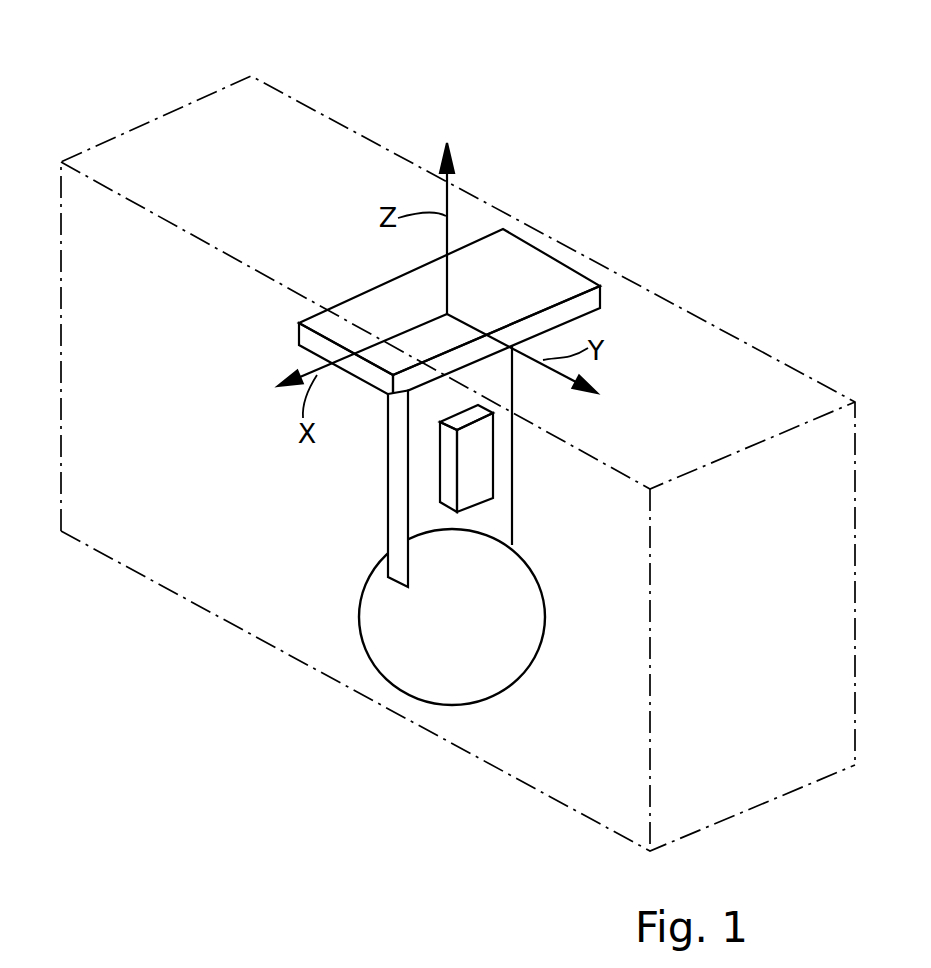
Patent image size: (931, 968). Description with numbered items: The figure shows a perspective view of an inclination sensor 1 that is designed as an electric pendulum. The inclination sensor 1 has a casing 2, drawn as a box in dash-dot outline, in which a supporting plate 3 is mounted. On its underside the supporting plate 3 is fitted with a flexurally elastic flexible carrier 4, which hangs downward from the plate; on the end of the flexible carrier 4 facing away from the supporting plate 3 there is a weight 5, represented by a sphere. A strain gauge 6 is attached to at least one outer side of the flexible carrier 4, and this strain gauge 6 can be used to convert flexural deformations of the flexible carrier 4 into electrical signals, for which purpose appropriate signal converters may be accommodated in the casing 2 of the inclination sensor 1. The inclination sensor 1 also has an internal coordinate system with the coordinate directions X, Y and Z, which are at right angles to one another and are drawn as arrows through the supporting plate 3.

The inclination sensor 1 is at (397, 108).
The casing 2 is at (294, 97).
The supporting plate 3 is at (536, 266).
The flexible carrier 4 is at (495, 513).
The weight 5 is at (525, 624).
The strain gauge 6 is at (478, 468).